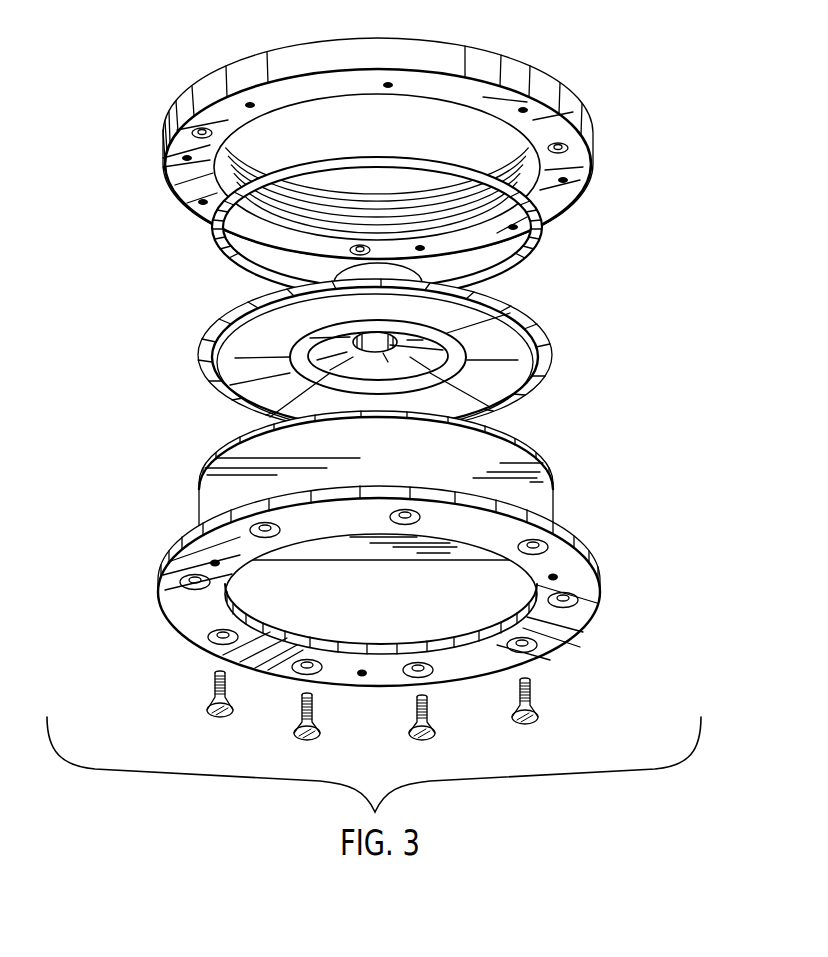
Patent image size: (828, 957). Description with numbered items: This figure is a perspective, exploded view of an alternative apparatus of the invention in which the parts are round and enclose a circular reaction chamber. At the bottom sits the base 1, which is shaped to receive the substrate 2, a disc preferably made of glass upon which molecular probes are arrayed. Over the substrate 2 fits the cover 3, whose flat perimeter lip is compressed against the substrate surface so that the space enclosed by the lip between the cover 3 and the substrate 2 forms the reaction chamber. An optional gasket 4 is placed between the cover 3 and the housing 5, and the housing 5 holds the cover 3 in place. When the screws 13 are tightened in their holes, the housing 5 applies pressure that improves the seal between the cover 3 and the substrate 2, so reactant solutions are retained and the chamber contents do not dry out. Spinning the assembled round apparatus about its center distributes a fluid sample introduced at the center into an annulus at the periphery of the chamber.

The base 1 is at (183, 538).
The substrate 2 is at (205, 452).
The cover 3 is at (205, 302).
The gasket 4 is at (213, 238).
The housing 5 is at (203, 92).
The screws 13 is at (212, 686).